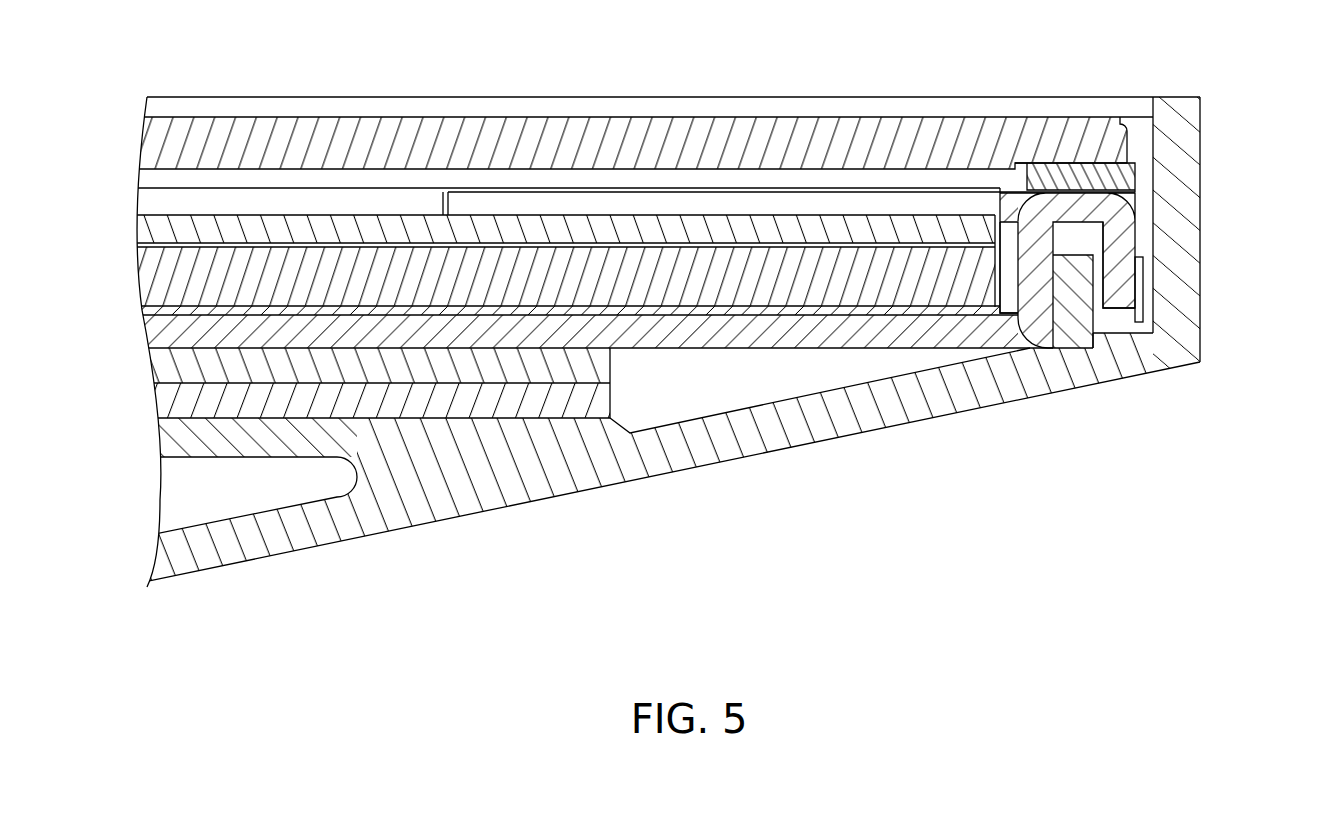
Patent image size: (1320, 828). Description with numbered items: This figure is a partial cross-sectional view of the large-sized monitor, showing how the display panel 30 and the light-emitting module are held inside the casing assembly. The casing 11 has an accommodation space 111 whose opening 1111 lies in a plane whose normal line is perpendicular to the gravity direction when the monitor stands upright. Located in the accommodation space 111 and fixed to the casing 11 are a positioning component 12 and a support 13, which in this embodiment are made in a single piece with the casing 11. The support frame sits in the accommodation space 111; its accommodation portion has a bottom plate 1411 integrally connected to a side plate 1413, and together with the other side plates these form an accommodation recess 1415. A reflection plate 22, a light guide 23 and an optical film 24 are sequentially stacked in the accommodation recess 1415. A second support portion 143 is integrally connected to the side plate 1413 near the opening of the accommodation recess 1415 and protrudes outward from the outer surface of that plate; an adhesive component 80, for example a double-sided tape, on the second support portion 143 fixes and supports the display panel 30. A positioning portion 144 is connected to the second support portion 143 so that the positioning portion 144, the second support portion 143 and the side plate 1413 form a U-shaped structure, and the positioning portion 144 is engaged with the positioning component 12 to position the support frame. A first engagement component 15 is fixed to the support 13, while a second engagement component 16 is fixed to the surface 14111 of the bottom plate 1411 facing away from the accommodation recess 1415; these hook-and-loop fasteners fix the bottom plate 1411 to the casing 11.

The casing 11 is at (1183, 210).
The accommodation space 111 is at (756, 377).
The opening 1111 is at (840, 90).
The positioning component 12 is at (1137, 260).
The support 13 is at (251, 447).
The surface of the bottom plate 14111 is at (904, 360).
The bottom plate 1411 is at (830, 333).
The side plate 1413 is at (1035, 250).
The accommodation recess 1415 is at (1006, 280).
The second support portion 143 is at (1074, 210).
The positioning portion 144 is at (1118, 283).
The first engagement component 15 is at (520, 402).
The second engagement component 16 is at (597, 365).
The reflection plate 22 is at (688, 315).
The light guide 23 is at (595, 278).
The optical film 24 is at (680, 228).
The display panel 30 is at (765, 130).
The adhesive component 80 is at (1117, 177).